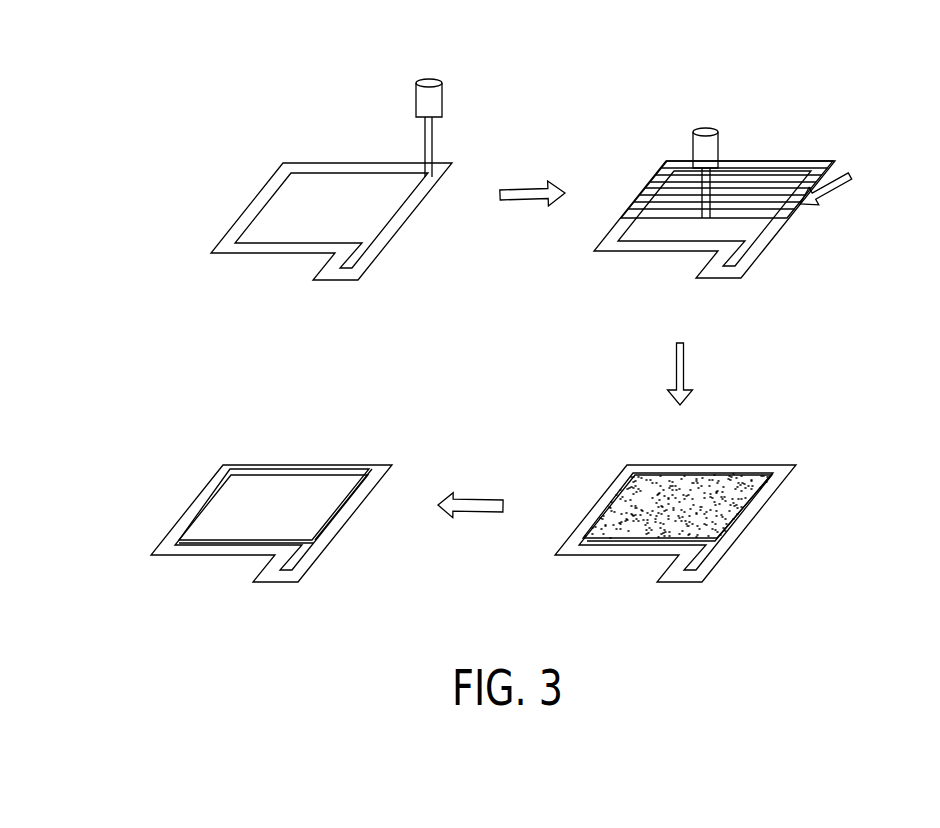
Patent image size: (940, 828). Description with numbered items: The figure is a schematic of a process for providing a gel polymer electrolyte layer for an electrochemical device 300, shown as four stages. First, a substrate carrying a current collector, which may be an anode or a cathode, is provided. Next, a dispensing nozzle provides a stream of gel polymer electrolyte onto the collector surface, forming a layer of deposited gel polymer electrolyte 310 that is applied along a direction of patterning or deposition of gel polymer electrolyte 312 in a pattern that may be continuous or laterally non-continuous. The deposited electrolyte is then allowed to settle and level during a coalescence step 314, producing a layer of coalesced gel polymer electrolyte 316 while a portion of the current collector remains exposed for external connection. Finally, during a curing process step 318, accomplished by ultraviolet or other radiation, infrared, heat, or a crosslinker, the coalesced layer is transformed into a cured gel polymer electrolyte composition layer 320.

The process for providing a gel polymer electrolyte layer for an electrochemical dev 300 is at (208, 114).
The layer of deposited gel polymer electrolyte 310 is at (812, 163).
The direction of patterning or deposition of gel polymer electrolyte 312 is at (847, 197).
The coalescence step 314 is at (685, 358).
The layer of coalesced gel polymer electrolyte 316 is at (747, 477).
The curing process step 318 is at (477, 497).
The cured gel polymer electrolyte composition layer 320 is at (318, 475).